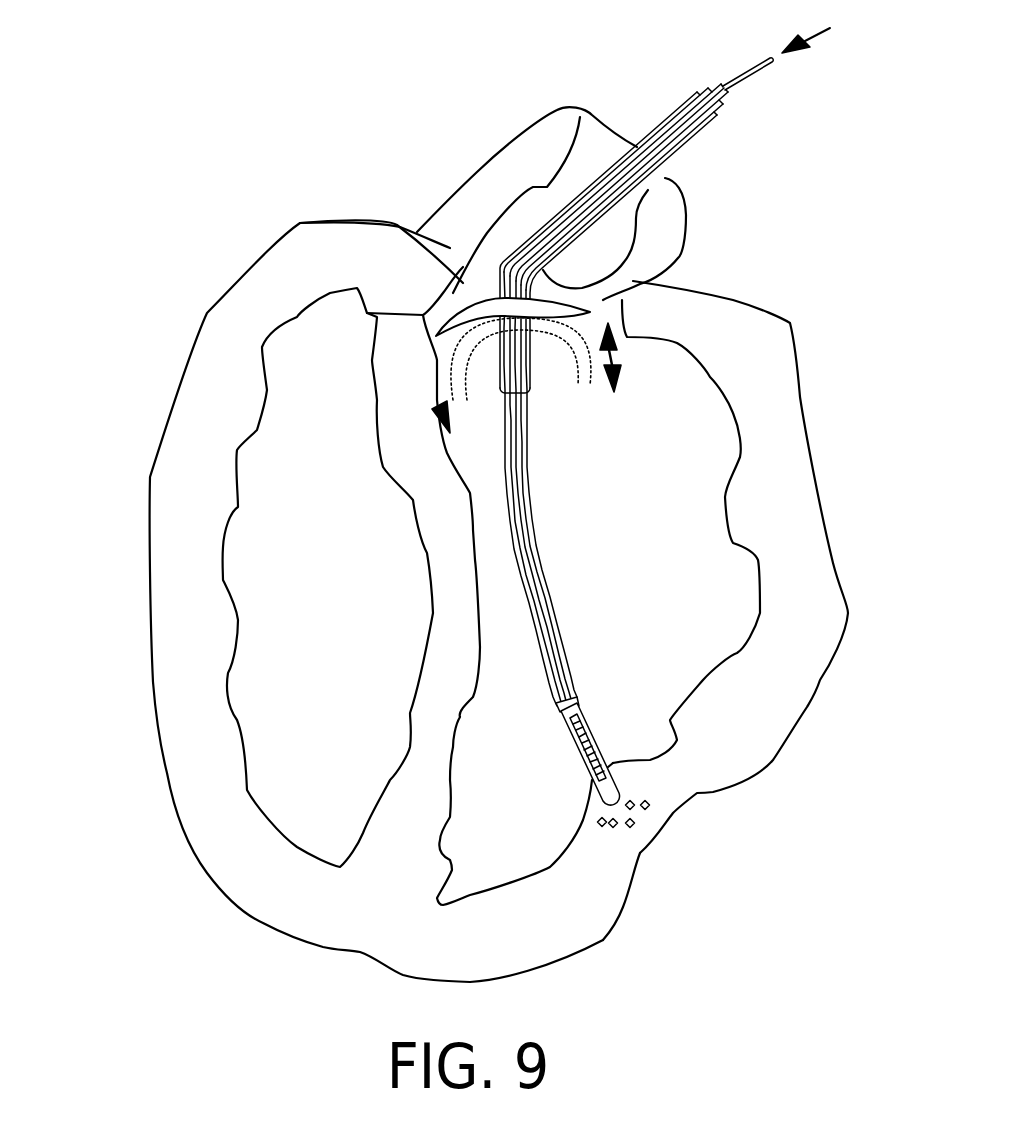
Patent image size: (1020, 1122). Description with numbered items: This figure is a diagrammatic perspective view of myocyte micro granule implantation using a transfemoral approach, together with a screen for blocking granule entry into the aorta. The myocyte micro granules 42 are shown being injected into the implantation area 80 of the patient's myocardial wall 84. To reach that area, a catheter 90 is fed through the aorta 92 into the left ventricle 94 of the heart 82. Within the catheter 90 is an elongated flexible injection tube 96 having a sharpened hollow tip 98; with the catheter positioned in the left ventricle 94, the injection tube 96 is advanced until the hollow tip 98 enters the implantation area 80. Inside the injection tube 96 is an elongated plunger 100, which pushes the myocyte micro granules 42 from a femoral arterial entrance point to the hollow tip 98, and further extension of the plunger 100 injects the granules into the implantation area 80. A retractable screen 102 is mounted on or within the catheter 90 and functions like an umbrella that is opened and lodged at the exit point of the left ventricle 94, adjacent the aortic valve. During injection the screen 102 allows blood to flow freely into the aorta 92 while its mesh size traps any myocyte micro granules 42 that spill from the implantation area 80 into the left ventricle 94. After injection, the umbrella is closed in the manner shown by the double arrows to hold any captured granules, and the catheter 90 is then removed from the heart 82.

The myocyte micro granules 42 is at (638, 820).
The implantation area 80 is at (610, 850).
The heart 82 is at (153, 682).
The myocardial wall 84 is at (783, 698).
The catheter 90 is at (688, 138).
The aorta 92 is at (477, 173).
The left ventricle 94 is at (687, 383).
The injection tube 96 is at (527, 477).
The hollow tip 98 is at (580, 758).
The plunger 100 is at (757, 70).
The retractable screen 102 is at (457, 312).